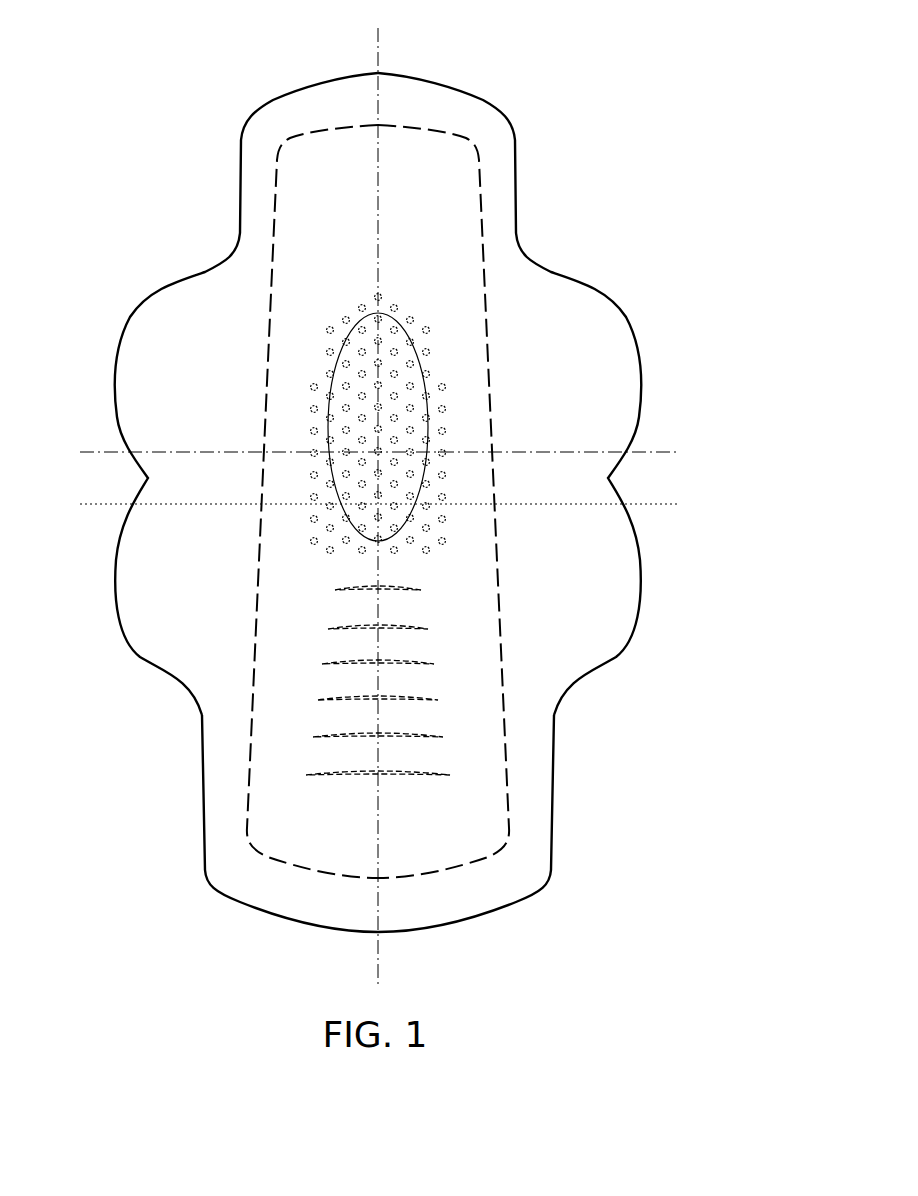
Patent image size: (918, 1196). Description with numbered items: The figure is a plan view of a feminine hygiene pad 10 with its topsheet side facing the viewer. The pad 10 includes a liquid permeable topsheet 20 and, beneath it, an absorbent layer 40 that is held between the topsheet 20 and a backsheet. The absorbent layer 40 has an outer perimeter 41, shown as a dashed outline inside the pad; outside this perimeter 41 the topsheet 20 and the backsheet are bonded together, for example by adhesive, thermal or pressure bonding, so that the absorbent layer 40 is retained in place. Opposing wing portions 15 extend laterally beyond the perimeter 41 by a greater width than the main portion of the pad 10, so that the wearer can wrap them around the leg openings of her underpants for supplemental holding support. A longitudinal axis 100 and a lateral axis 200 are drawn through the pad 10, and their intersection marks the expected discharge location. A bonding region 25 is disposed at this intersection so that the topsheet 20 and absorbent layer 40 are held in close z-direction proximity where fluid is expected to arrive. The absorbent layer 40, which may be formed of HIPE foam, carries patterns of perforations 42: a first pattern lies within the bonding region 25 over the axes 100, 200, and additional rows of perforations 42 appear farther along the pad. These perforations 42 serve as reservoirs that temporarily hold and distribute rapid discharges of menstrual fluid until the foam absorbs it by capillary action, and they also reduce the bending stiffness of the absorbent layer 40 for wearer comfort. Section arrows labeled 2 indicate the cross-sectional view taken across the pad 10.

The feminine hygiene pad 10 is at (368, 468).
The longitudinal axis 100 is at (378, 52).
The lateral axis 200 is at (100, 505).
The wing portions 15 is at (182, 305).
The topsheet 20 is at (517, 501).
The absorbent layer 40 is at (517, 501).
The outer perimeter 41 is at (492, 390).
The perforations 42 is at (362, 306).
The bonding region 25 is at (407, 525).
The section line 2- 2 is at (98, 465).